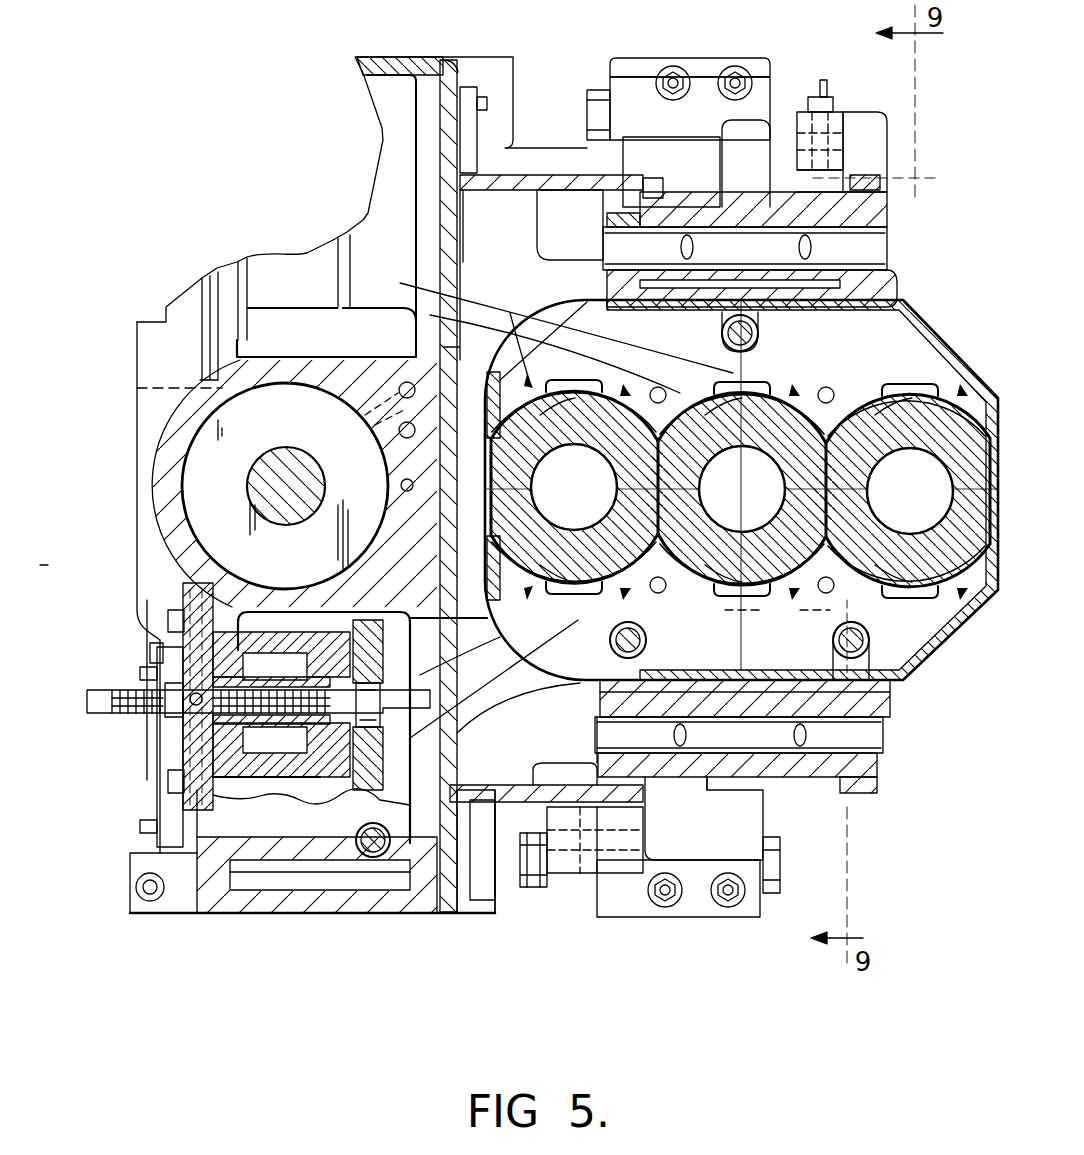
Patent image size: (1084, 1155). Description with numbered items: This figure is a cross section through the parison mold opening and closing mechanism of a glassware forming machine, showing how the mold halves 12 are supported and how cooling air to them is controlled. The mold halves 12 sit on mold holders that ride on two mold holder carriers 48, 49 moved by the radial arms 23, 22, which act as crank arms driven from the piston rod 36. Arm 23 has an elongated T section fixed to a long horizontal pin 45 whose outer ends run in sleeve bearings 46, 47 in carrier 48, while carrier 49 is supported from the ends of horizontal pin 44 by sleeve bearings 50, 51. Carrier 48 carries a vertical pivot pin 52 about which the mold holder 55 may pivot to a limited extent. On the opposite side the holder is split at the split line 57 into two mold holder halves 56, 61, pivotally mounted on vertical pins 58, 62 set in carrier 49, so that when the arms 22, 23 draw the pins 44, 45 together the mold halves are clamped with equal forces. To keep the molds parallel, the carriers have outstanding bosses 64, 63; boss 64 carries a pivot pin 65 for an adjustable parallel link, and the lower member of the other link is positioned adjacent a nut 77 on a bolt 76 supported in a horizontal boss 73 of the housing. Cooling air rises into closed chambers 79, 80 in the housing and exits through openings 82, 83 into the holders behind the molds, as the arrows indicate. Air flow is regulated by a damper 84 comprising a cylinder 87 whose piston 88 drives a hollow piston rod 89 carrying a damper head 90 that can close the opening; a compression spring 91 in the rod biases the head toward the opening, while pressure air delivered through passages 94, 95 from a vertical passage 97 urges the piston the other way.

The mold halves 12 is at (613, 548).
The radial arm 22 is at (752, 812).
The radial arm 23 is at (752, 133).
The piston rod 36 is at (262, 483).
The horizontal pin 44 is at (885, 736).
The horizontal pin 45 is at (885, 252).
The sleeve bearing 46 is at (600, 222).
The sleeve bearing 47 is at (888, 222).
The mold holder carrier 48 is at (900, 297).
The mold holder carrier 49 is at (890, 698).
The sleeve bearing 50 is at (878, 770).
The sleeve bearing 51 is at (597, 762).
The vertical pivot pin 52 is at (722, 333).
The mold holder 55 is at (937, 365).
The mold holder half 56 is at (917, 625).
The split line 57 is at (743, 652).
The vertical pin 58 is at (862, 645).
The mold holder half 61 is at (543, 623).
The vertical pin 62 is at (610, 641).
The boss 63 is at (622, 868).
The boss 64 is at (872, 168).
The pivot pin 65 is at (858, 135).
The horizontal boss 73 is at (690, 907).
The bolt 76 is at (778, 883).
The nut 77 is at (532, 888).
The closed chamber 79 is at (332, 792).
The closed chamber 80 is at (402, 128).
The opening 82 is at (440, 782).
The opening 83 is at (447, 200).
The damper 84 is at (183, 745).
The cylinder 87 is at (317, 772).
The piston 88 is at (230, 735).
The piston rod 89 is at (275, 713).
The damper head 90 is at (369, 625).
The compression spring 91 is at (282, 653).
The passage 94 is at (188, 638).
The passage 95 is at (137, 388).
The vertical passage 97 is at (404, 380).